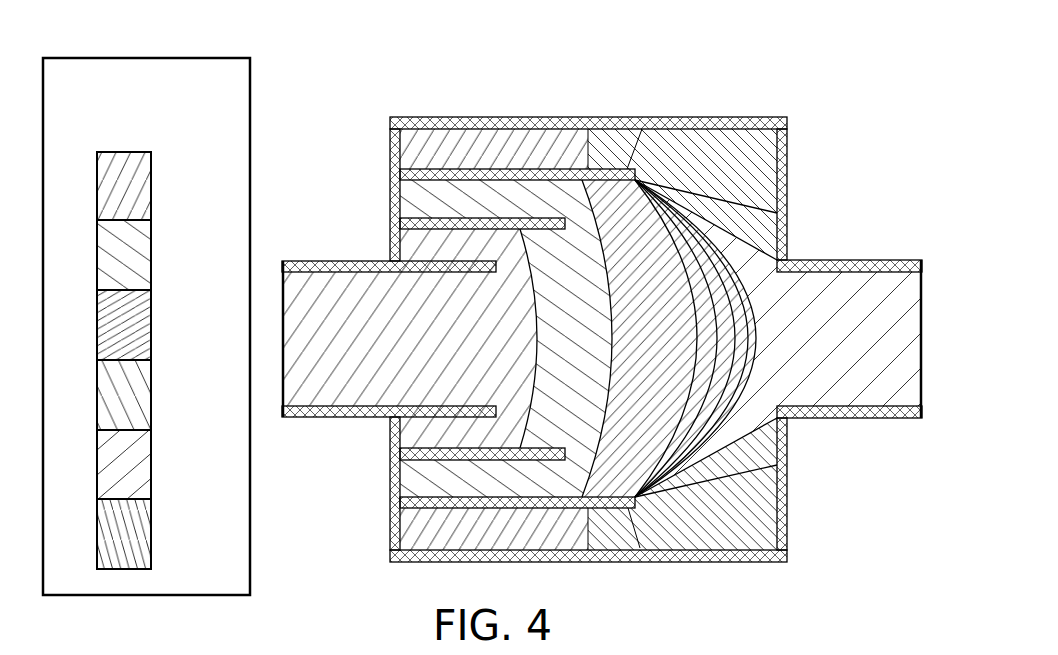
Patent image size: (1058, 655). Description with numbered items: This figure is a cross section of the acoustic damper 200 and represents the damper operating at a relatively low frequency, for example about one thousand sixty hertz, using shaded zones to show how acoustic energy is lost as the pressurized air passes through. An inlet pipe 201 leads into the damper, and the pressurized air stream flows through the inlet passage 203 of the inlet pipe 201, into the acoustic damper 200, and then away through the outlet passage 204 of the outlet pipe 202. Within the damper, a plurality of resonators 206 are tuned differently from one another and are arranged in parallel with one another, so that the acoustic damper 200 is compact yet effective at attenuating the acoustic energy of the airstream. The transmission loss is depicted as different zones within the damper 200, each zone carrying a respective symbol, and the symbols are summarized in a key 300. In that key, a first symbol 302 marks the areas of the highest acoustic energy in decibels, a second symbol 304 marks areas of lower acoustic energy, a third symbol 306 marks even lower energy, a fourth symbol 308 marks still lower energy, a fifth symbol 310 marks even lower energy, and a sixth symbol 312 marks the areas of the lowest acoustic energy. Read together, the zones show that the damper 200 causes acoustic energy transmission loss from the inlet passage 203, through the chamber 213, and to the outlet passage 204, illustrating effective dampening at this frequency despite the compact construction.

The acoustic damper 200 is at (602, 282).
The inlet pipe 201 is at (321, 261).
The outlet pipe 202 is at (852, 260).
The inlet passage 203 is at (409, 338).
The outlet passage 204 is at (778, 338).
The resonators 206 is at (648, 162).
The chamber 213 is at (506, 338).
The key 300 is at (121, 43).
The first symbol 302 is at (151, 189).
The second symbol 304 is at (151, 259).
The third symbol 306 is at (151, 327).
The fourth symbol 308 is at (151, 397).
The fifth symbol 310 is at (151, 467).
The sixth symbol 312 is at (151, 537).